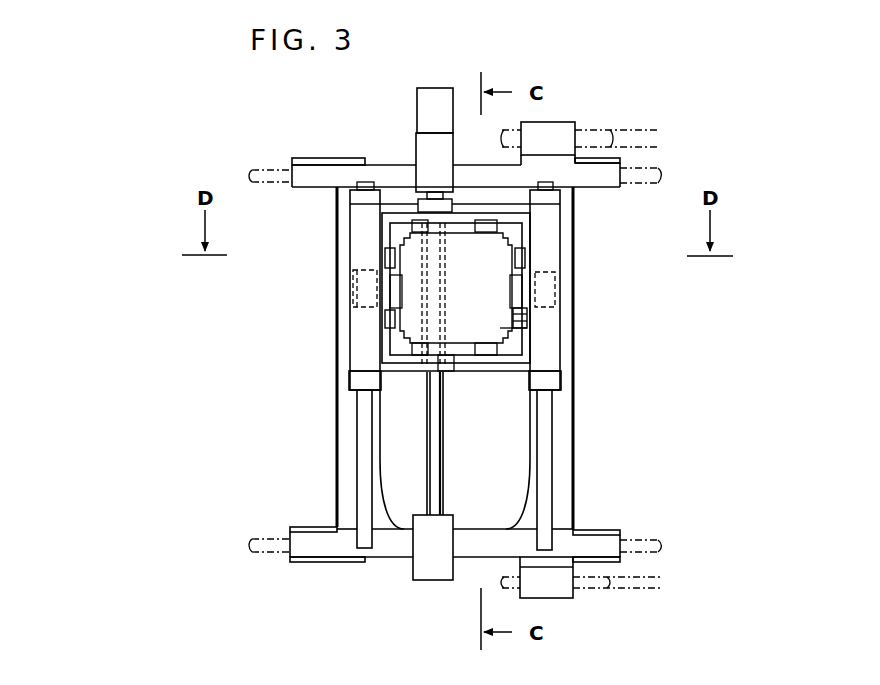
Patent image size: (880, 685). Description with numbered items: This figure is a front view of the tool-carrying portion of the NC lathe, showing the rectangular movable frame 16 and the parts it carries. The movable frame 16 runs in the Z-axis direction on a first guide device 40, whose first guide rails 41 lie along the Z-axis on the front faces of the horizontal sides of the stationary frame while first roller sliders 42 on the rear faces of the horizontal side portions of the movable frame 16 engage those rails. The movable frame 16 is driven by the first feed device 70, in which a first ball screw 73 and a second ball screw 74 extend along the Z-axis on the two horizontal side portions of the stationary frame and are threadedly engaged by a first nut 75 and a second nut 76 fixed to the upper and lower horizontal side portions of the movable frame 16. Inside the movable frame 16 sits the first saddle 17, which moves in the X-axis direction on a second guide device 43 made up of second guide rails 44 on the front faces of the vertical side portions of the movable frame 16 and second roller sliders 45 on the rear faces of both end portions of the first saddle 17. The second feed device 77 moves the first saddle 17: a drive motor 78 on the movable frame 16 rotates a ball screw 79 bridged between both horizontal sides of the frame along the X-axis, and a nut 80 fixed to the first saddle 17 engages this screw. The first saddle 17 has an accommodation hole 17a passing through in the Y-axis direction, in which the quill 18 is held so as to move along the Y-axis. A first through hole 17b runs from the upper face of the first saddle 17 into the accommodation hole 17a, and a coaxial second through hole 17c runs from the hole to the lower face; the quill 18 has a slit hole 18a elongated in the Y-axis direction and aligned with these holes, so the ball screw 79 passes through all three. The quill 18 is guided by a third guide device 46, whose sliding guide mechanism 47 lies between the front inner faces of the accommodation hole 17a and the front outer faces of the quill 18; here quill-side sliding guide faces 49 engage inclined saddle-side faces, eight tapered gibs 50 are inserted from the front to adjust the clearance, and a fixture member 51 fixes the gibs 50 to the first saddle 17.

The movable frame 16 is at (337, 216).
The first saddle 17 is at (357, 238).
The accommodation hole 17a is at (393, 305).
The first through hole 17b is at (437, 227).
The second through hole 17c is at (442, 380).
The quill 18 is at (383, 328).
The slit hole 18a is at (428, 290).
The first guide device 40 is at (499, 340).
The first guide rails 41 is at (665, 177).
The first roller sliders 42 is at (318, 158).
The second guide device 43 is at (562, 406).
The second guide rails 44 is at (363, 440).
The second roller sliders 45 is at (357, 380).
The third guide device 46 is at (642, 300).
The sliding guide mechanism 47 is at (532, 305).
The quill-side sliding guide faces 49 is at (520, 323).
The gibs 50 is at (520, 314).
The fixture member 51 is at (527, 318).
The first feed device 70 is at (524, 363).
The first ball screw 73 is at (620, 133).
The second ball screw 74 is at (607, 582).
The first nut 75 is at (562, 128).
The second nut 76 is at (566, 597).
The second feed device 77 is at (404, 108).
The drive motor 78 is at (425, 118).
The ball screw 79 is at (438, 447).
The nut 80 is at (445, 203).